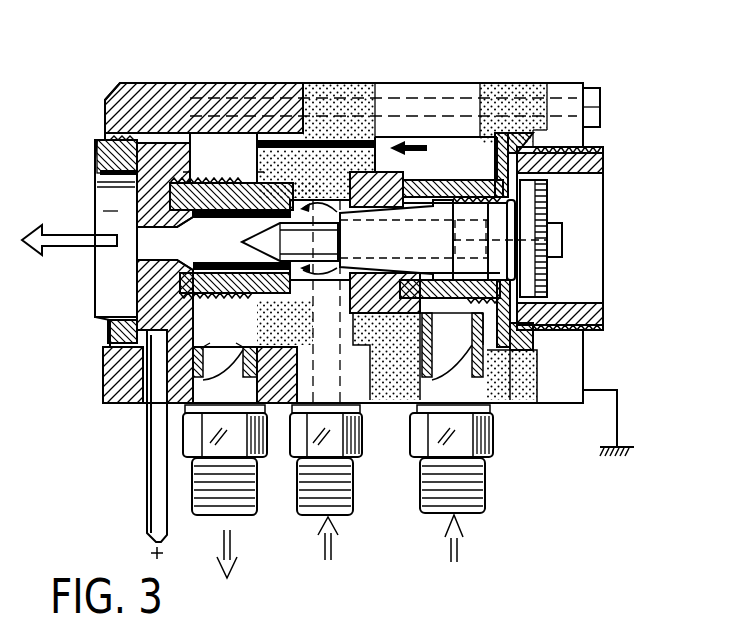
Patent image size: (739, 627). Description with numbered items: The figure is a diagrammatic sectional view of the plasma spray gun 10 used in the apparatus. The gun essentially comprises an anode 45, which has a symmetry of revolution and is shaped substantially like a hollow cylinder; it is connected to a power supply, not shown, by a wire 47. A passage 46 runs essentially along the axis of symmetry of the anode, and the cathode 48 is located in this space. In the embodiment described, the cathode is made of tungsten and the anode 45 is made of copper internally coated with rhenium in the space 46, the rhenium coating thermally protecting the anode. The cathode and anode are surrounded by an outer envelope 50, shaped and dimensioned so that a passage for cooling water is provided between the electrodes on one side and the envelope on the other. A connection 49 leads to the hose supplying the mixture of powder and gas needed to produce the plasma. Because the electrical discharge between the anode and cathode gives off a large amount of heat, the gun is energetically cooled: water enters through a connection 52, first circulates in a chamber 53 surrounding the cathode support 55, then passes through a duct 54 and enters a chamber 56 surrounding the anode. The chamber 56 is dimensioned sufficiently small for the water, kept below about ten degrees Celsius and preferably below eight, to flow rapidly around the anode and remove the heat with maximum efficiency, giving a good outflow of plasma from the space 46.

The gun 10 is at (354, 62).
The anode 45 is at (147, 295).
The passage 46 is at (163, 205).
The wire 47 is at (157, 484).
The cathode 48 is at (255, 234).
The connection 49 is at (352, 487).
The outer envelope 50 is at (393, 83).
The connection 52 is at (485, 480).
The chamber 53 is at (480, 150).
The duct 54 is at (312, 147).
The cathode support 55 is at (430, 183).
The chamber 56 is at (200, 148).